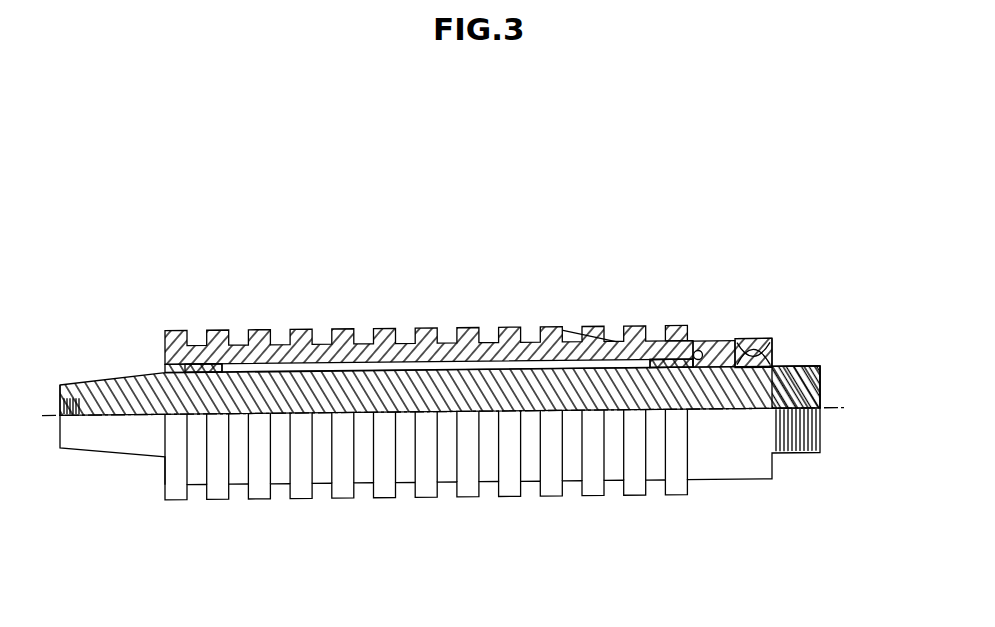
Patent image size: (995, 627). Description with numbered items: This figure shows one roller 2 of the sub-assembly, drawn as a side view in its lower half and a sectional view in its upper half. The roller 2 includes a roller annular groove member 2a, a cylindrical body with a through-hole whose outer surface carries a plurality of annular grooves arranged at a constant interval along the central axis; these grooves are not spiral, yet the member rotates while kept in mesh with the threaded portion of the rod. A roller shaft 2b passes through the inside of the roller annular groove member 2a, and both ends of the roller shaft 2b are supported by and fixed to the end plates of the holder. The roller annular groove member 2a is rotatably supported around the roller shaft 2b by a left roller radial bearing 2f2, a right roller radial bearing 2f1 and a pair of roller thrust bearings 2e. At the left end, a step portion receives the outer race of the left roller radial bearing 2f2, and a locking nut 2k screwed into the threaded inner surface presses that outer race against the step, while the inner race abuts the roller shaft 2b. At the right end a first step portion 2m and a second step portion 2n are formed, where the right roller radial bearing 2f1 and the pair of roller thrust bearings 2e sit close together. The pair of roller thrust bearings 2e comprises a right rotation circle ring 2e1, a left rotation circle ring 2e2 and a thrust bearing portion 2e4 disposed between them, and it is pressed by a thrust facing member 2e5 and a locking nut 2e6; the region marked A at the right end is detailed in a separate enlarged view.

The roller 2 is at (205, 512).
The roller annular groove member 2a is at (270, 357).
The roller shaft 2b is at (118, 417).
The locking nut 2k is at (155, 371).
The right roller radial bearing 2f1 is at (670, 362).
The left roller radial bearing 2f2 is at (173, 363).
The first step portion 2m is at (541, 328).
The second step portion 2n is at (668, 352).
The pair of roller thrust bearings 2e is at (795, 268).
The right rotation circle ring 2e1 is at (748, 341).
The left rotation circle ring 2e2 is at (674, 330).
The thrust bearing portion 2e4 is at (716, 342).
The thrust facing member 2e5 is at (778, 352).
The locking nut 2e6 is at (773, 342).
The surface A is at (775, 364).